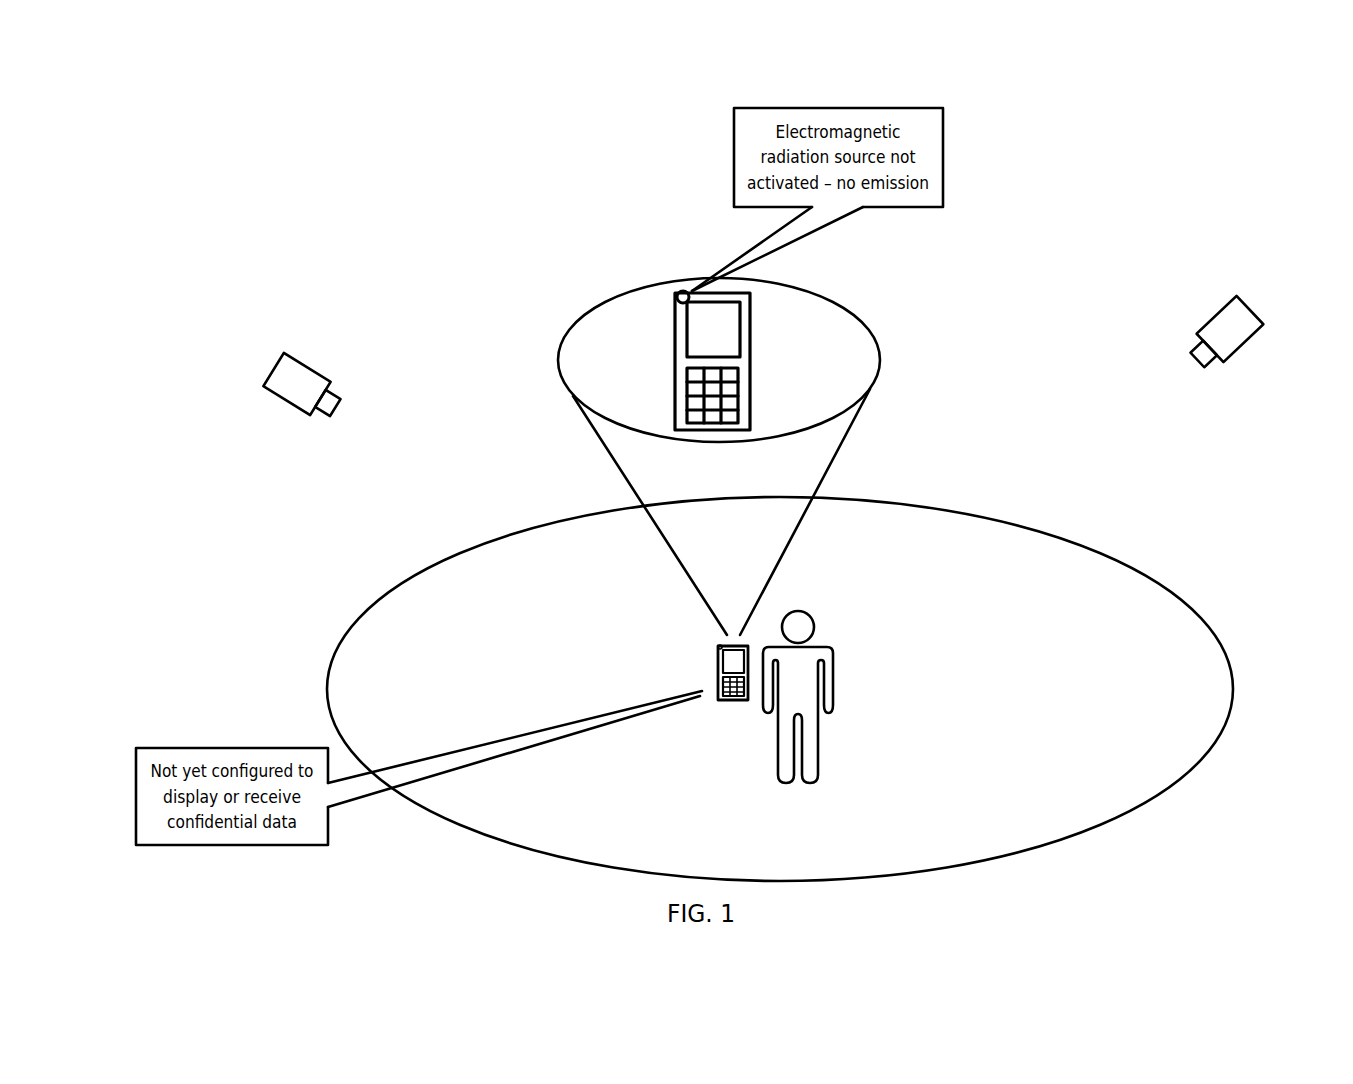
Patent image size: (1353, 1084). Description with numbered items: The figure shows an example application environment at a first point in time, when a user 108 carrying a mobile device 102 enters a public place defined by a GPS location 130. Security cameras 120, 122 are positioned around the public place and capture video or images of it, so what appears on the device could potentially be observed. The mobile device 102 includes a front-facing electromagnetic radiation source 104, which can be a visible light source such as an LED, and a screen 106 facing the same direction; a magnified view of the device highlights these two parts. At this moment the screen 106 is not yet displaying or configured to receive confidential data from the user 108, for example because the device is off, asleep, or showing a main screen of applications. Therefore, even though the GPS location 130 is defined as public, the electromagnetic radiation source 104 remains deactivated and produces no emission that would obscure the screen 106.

The mobile device 102 is at (718, 670).
The electromagnetic radiation source 104 is at (677, 293).
The screen 106 is at (715, 337).
The user 108 is at (837, 697).
The security camera 120 is at (303, 362).
The security camera 122 is at (1218, 312).
The GPS location 130 is at (362, 617).